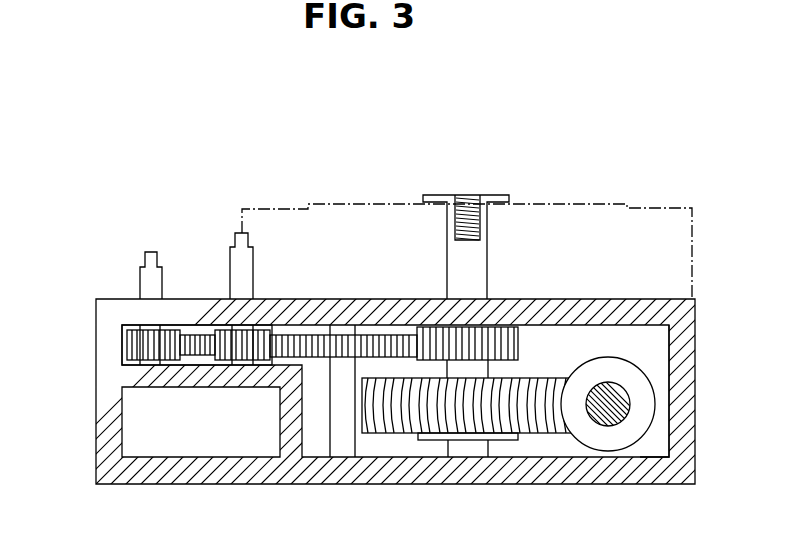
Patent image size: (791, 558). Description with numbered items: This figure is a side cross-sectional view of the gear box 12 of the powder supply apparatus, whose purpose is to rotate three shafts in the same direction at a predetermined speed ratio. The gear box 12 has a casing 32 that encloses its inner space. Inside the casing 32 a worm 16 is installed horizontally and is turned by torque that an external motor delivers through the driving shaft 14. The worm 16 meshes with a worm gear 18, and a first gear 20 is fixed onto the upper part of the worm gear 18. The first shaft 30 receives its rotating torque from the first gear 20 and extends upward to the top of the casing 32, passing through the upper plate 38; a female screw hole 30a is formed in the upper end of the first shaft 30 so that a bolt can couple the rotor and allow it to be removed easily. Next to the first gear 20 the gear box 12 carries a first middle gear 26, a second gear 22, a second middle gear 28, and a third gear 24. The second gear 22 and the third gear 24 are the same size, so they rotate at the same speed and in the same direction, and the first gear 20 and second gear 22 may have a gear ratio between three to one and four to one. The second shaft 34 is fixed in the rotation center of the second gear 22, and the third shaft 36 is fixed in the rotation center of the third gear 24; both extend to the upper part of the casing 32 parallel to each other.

The gear box 12 is at (90, 402).
The driving shaft 14 is at (605, 420).
The worm 16 is at (638, 382).
The worm gear 18 is at (528, 405).
The first gear 20 is at (436, 352).
The second gear 22 is at (246, 350).
The third gear 24 is at (148, 352).
The first middle gear 26 is at (342, 350).
The second middle gear 28 is at (200, 350).
The first shaft 30 is at (472, 268).
The female screw hole 30a is at (470, 195).
The casing 32 is at (680, 428).
The second shaft 34 is at (240, 280).
The third shaft 36 is at (150, 285).
The upper plate 38 is at (348, 203).